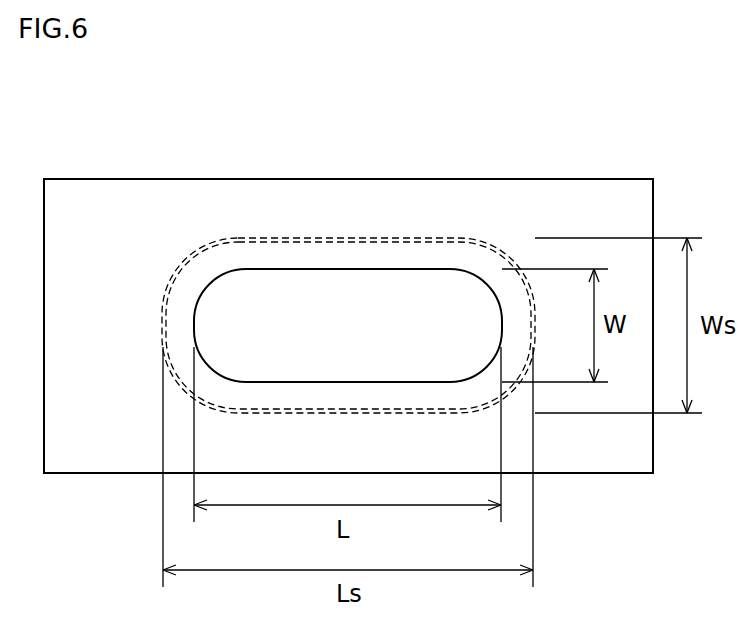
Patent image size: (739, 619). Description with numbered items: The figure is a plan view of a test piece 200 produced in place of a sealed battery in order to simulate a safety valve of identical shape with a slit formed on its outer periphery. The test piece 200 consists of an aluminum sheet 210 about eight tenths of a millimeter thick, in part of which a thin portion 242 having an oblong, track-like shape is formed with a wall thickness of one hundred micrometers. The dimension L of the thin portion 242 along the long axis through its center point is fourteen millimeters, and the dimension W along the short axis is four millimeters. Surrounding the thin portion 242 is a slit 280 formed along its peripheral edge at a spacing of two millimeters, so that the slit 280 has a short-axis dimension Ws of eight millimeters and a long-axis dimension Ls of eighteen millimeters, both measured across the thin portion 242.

The test piece 200 is at (588, 176).
The aluminum sheet 210 is at (533, 192).
The slit 280 is at (331, 238).
The thin portion 242 is at (400, 298).